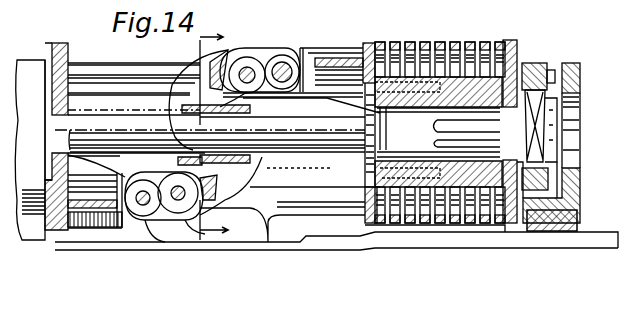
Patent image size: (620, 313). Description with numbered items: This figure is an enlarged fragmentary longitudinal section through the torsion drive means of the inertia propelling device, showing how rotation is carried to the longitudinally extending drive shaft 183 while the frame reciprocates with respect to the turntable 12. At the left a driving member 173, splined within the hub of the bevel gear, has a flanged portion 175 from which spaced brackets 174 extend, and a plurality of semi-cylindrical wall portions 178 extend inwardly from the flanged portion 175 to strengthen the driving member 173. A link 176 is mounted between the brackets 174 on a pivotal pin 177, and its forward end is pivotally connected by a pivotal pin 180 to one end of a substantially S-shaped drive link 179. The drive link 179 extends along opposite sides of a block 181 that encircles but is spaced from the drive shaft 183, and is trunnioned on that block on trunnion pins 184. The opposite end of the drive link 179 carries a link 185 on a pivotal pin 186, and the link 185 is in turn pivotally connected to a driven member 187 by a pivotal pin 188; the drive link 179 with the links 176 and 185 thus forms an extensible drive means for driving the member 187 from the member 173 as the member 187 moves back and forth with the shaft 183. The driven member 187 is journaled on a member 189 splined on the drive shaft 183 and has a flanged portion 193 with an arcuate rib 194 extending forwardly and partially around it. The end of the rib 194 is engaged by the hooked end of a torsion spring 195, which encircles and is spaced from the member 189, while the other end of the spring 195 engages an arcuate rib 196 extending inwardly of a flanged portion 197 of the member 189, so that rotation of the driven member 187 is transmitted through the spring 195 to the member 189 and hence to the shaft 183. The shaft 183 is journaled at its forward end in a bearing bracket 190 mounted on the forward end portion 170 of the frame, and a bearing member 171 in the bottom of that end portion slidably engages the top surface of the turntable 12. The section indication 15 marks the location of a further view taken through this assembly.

The turntable 12 is at (572, 249).
The section line 15 is at (224, 133).
The forward end portion 170 is at (580, 184).
The bearing member 171 is at (529, 232).
The driving member 173 is at (52, 62).
The brackets 174 is at (182, 216).
The flanged portion 175 is at (62, 236).
The link 176 is at (150, 216).
The pivotal pin 177 is at (135, 216).
The semi-cylindrical wall portions 178 is at (138, 66).
The S-shaped drive link 179 is at (250, 157).
The pivotal pin 180 is at (210, 210).
The block 181 is at (327, 155).
The drive shaft 183 is at (80, 115).
The trunnion pins 184 is at (238, 126).
The link 185 is at (273, 58).
The pivotal pin 186 is at (206, 52).
The driven member 187 is at (352, 47).
The pivotal pin 188 is at (288, 58).
The member 189 is at (513, 53).
The bearing bracket 190 is at (540, 63).
The flanged portion 193 is at (370, 43).
The arcuate rib 194 is at (424, 42).
The torsion spring 195 is at (421, 226).
The arcuate rib 196 is at (479, 226).
The flanged portion 197 is at (509, 42).